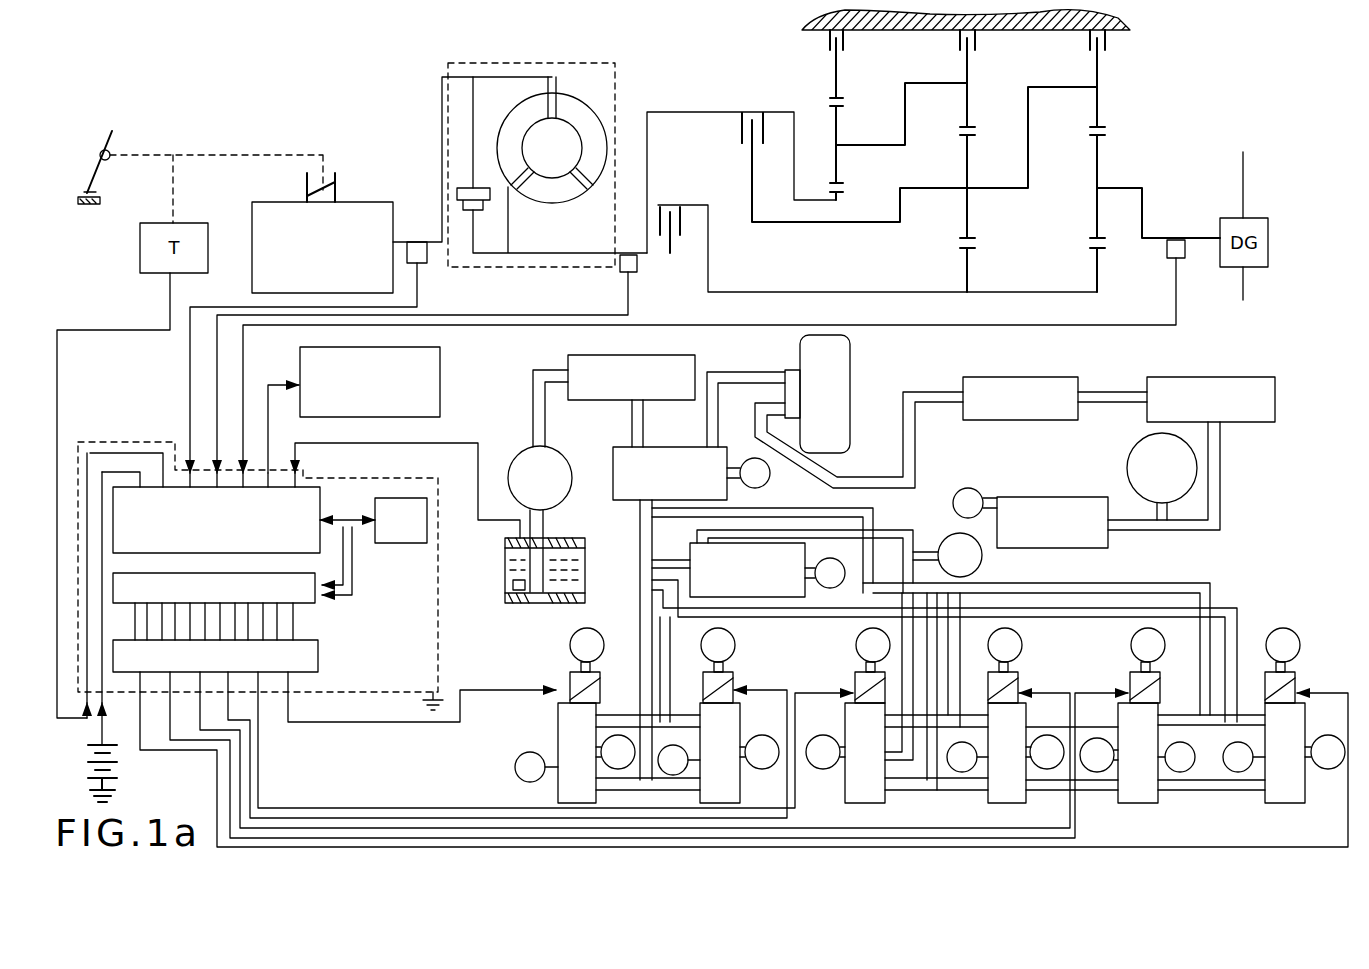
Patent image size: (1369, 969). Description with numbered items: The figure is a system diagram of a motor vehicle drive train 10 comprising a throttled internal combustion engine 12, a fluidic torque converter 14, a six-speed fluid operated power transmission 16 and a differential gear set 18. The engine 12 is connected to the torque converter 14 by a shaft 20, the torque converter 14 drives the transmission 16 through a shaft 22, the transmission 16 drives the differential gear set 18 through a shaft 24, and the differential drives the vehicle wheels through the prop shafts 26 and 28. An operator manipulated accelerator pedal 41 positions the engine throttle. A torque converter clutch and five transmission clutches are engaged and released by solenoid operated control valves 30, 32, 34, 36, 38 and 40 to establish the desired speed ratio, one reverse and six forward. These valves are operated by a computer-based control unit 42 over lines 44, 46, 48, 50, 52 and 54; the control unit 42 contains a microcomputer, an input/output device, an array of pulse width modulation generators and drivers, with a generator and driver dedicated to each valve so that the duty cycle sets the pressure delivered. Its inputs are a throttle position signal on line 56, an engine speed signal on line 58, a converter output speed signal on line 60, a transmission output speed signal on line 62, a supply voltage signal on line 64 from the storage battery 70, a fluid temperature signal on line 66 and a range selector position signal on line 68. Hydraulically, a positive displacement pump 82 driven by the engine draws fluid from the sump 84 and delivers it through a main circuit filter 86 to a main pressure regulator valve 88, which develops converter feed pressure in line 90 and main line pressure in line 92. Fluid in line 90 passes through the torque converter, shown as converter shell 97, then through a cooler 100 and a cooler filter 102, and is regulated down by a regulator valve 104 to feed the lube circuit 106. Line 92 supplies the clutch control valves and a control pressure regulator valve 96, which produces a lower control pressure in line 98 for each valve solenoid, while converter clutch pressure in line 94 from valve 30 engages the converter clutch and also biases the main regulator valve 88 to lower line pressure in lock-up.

The motor vehicle drive train 10 is at (360, 118).
The throttled internal combustion engine 12 is at (357, 210).
The fluidic torque converter 14 is at (448, 63).
The six-speed fluid operated power transmission 16 is at (742, 100).
The differential gear set 18 is at (1225, 253).
The shaft 20 is at (440, 225).
The shaft 22 is at (640, 260).
The shaft 24 is at (1142, 208).
The prop shaft 26 is at (1245, 173).
The prop shaft 28 is at (1245, 285).
The solenoid operated control valve 30 is at (843, 737).
The solenoid operated control valve 32 is at (568, 742).
The solenoid operated control valve 34 is at (742, 727).
The solenoid operated control valve 36 is at (1017, 782).
The solenoid operated control valve 38 is at (1137, 802).
The solenoid operated control valve 40 is at (1288, 800).
The accelerator pedal 41 is at (108, 128).
The computer-based control unit 42 is at (446, 590).
The line 44 is at (248, 733).
The line 46 is at (348, 722).
The line 48 is at (380, 808).
The line 50 is at (242, 753).
The line 52 is at (164, 702).
The line 54 is at (217, 800).
The line 56 is at (60, 448).
The line 58 is at (190, 330).
The line 60 is at (215, 385).
The line 62 is at (243, 360).
The line 64 is at (105, 723).
The line 66 is at (440, 442).
The line 68 is at (268, 420).
The storage battery 70 is at (88, 753).
The positive displacement pump 82 is at (563, 478).
The sump or reservoir 84 is at (497, 592).
The main circuit filter 86 is at (612, 360).
The main pressure regulator valve 88 is at (700, 455).
The line 90 is at (757, 377).
The line 92 is at (643, 592).
The line 94 is at (765, 530).
The control pressure regulator valve 96 is at (743, 597).
The converter shell 97 is at (820, 360).
The line 98 is at (667, 658).
The cooler 100 is at (1013, 382).
The cooler filter 102 is at (1262, 392).
The regulator valve 104 is at (1097, 523).
The transmission lube circuit 106 is at (1155, 447).